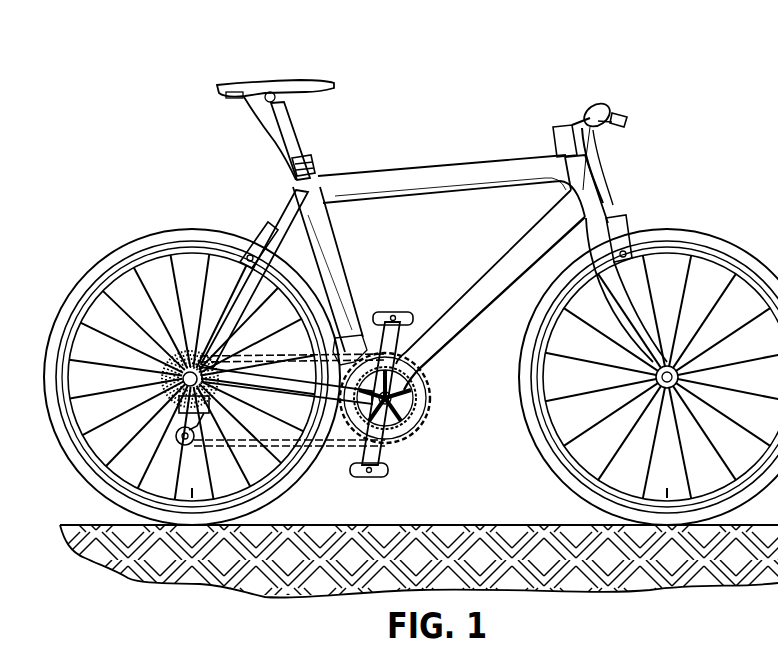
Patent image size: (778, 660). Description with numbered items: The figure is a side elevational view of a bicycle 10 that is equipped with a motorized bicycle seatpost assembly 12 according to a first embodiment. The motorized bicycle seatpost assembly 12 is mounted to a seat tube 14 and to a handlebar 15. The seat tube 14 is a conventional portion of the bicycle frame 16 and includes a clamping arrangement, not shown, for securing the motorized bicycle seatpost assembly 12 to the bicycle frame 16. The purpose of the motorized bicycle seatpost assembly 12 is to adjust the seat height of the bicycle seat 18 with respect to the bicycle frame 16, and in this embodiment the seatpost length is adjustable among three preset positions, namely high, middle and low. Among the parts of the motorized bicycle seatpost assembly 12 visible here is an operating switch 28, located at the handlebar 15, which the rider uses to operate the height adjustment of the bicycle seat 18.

The bicycle 10 is at (411, 271).
The motorized bicycle seatpost assembly 12 is at (250, 145).
The seat tube 14 is at (433, 257).
The handlebar 15 is at (615, 137).
The bicycle frame 16 is at (405, 166).
The bicycle seat 18 is at (296, 73).
The operating switch 28 is at (616, 139).